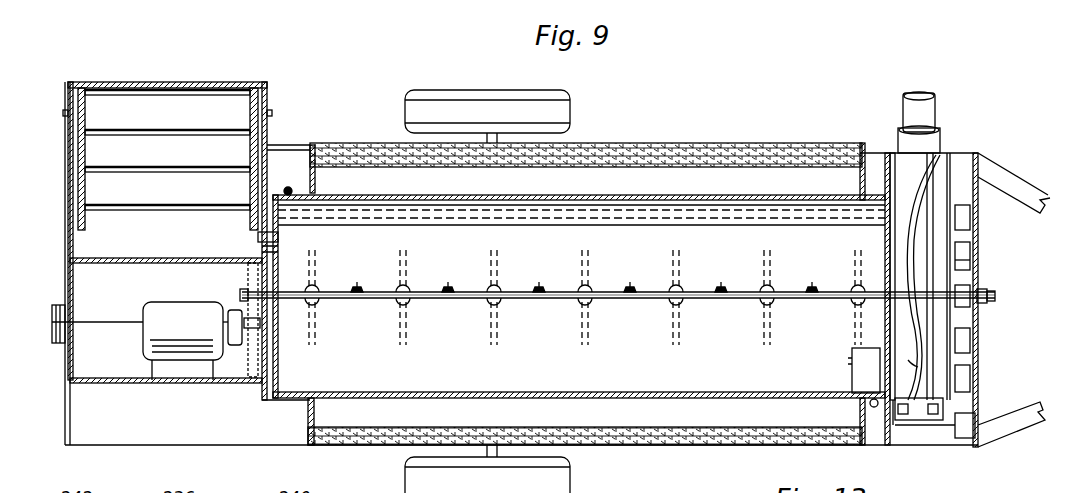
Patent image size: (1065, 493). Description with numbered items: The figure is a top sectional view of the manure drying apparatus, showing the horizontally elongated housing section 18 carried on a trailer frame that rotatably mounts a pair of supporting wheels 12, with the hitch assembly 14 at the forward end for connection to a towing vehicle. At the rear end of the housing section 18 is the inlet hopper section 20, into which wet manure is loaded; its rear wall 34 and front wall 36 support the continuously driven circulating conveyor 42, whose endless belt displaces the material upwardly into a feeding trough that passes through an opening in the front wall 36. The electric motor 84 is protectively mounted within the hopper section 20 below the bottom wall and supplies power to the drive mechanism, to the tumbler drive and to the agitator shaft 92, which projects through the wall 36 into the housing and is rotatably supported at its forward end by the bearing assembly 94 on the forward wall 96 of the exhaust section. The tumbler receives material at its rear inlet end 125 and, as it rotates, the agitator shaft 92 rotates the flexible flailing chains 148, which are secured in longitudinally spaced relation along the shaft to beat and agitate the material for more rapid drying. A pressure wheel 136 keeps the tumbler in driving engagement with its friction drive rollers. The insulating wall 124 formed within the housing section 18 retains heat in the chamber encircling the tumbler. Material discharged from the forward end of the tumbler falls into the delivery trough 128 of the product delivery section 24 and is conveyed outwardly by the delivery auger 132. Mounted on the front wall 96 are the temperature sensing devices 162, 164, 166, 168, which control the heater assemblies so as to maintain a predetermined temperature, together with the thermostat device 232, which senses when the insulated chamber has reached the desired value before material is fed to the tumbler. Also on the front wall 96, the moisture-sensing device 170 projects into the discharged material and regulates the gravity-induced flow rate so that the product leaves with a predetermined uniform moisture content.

The supporting wheels 12 is at (437, 102).
The hitch assembly 14 is at (1003, 175).
The housing section 18 is at (618, 143).
The inlet hopper section 20 is at (60, 280).
The product delivery section 24 is at (942, 112).
The rear wall 34 is at (70, 186).
The front wall 36 is at (268, 135).
The circulating conveyor 42 is at (184, 118).
The electric motor 84 is at (183, 320).
The agitator shaft 92 is at (466, 299).
The bearing assembly 94 is at (990, 294).
The forward wall 96 is at (975, 250).
The insulating wall 124 is at (655, 440).
The rear inlet end 125 is at (262, 250).
The delivery trough 128 is at (937, 180).
The delivery auger 132 is at (918, 367).
The pressure wheel 136 is at (860, 388).
The flexible flailing chains 148 is at (498, 336).
The temperature sensing device 162 is at (966, 225).
The temperature sensing device 164 is at (968, 263).
The temperature sensing device 166 is at (970, 340).
The temperature sensing device 168 is at (965, 385).
The moisture-sensing device 170 is at (883, 410).
The thermostat device 232 is at (975, 305).